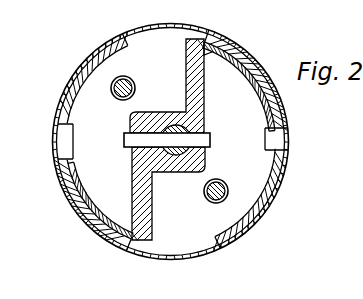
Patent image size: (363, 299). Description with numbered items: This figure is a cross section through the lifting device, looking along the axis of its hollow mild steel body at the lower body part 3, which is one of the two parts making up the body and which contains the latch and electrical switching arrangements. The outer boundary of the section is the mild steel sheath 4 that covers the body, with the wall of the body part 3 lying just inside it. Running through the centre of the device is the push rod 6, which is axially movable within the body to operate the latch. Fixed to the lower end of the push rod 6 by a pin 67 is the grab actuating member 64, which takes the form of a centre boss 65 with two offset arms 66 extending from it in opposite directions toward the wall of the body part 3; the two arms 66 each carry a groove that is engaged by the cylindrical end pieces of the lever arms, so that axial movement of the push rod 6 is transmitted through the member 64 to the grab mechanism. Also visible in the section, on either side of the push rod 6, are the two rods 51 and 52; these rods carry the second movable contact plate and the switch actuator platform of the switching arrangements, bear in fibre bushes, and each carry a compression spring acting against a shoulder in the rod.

The lower body part 3 is at (90, 67).
The mild steel sheath 4 is at (167, 24).
The push rod 6 is at (203, 129).
The rod 51 is at (131, 83).
The rod 52 is at (209, 199).
The grab actuating member 64 is at (146, 178).
The centre boss 65 is at (205, 163).
The offset arms 66 is at (200, 71).
The pin 67 is at (124, 143).